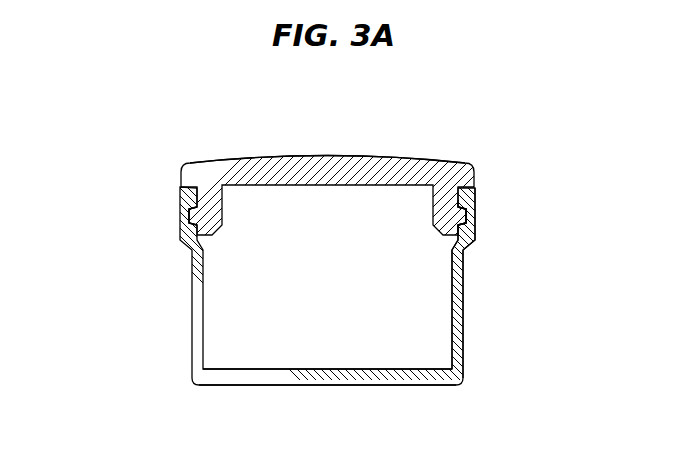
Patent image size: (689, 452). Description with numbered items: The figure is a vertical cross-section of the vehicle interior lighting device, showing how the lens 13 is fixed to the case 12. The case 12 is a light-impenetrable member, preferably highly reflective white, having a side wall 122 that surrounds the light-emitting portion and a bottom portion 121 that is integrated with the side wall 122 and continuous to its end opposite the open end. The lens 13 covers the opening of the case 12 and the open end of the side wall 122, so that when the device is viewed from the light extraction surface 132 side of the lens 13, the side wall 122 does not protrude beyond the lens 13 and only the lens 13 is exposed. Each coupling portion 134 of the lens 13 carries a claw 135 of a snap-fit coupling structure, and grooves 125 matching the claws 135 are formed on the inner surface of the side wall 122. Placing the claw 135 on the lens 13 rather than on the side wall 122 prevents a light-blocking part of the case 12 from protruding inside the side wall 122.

The lens 13 is at (296, 197).
The light extraction surface 132 is at (297, 155).
The claw 135 is at (452, 213).
The coupling portion 134 is at (372, 260).
The groove 125 is at (466, 216).
The case 12 is at (357, 308).
The side wall 122 is at (462, 303).
The bottom portion 121 is at (335, 386).